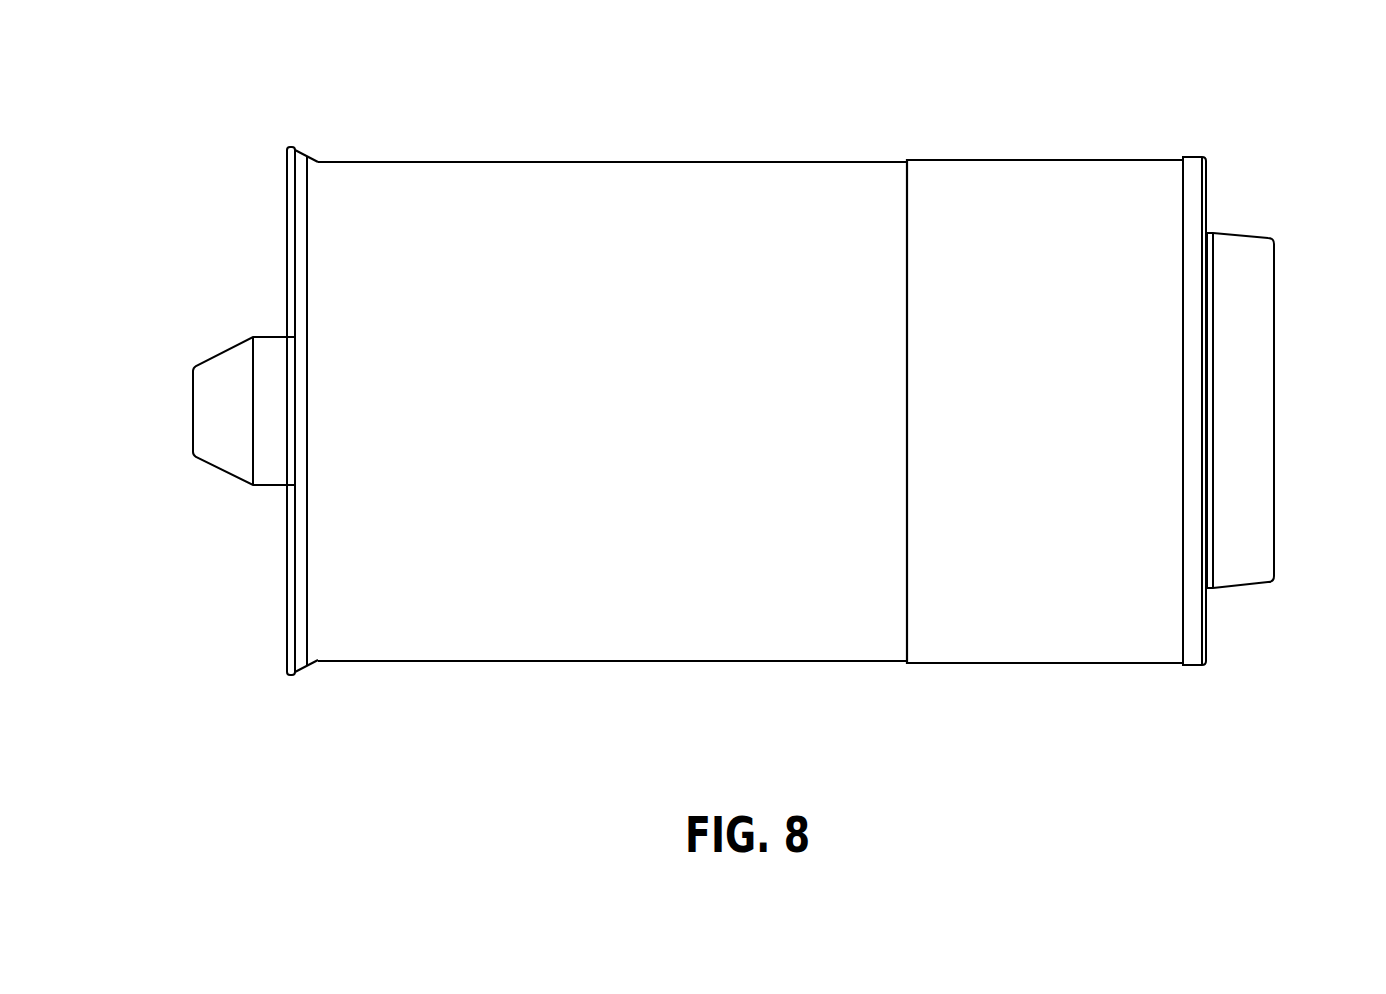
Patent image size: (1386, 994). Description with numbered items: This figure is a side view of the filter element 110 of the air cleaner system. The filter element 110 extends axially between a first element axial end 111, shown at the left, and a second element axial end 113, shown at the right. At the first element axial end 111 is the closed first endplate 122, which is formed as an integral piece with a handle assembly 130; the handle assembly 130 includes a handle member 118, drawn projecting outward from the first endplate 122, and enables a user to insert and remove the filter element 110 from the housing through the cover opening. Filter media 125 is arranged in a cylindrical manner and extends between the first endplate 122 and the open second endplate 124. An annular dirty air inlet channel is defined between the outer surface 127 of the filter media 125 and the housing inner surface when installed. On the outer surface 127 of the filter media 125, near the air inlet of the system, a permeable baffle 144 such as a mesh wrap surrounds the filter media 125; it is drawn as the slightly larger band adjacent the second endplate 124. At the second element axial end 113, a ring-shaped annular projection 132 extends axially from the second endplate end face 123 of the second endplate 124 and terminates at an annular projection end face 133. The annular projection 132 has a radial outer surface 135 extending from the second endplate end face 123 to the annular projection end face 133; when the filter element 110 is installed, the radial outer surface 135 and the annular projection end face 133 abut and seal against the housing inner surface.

The filter element 110 is at (1090, 80).
The first element axial end 111 is at (260, 655).
The second element axial end 113 is at (1233, 660).
The handle member 118 is at (200, 398).
The first endplate 122 is at (300, 185).
The second endplate end face 123 is at (1207, 190).
The second endplate 124 is at (1195, 160).
The filter media 125 is at (575, 180).
The outer surface 127 is at (695, 162).
The handle assembly 130 is at (212, 503).
The annular projection 132 is at (1257, 560).
The annular projection end face 133 is at (1275, 390).
The radial outer surface 135 is at (1240, 258).
The permeable baffle 144 is at (948, 178).